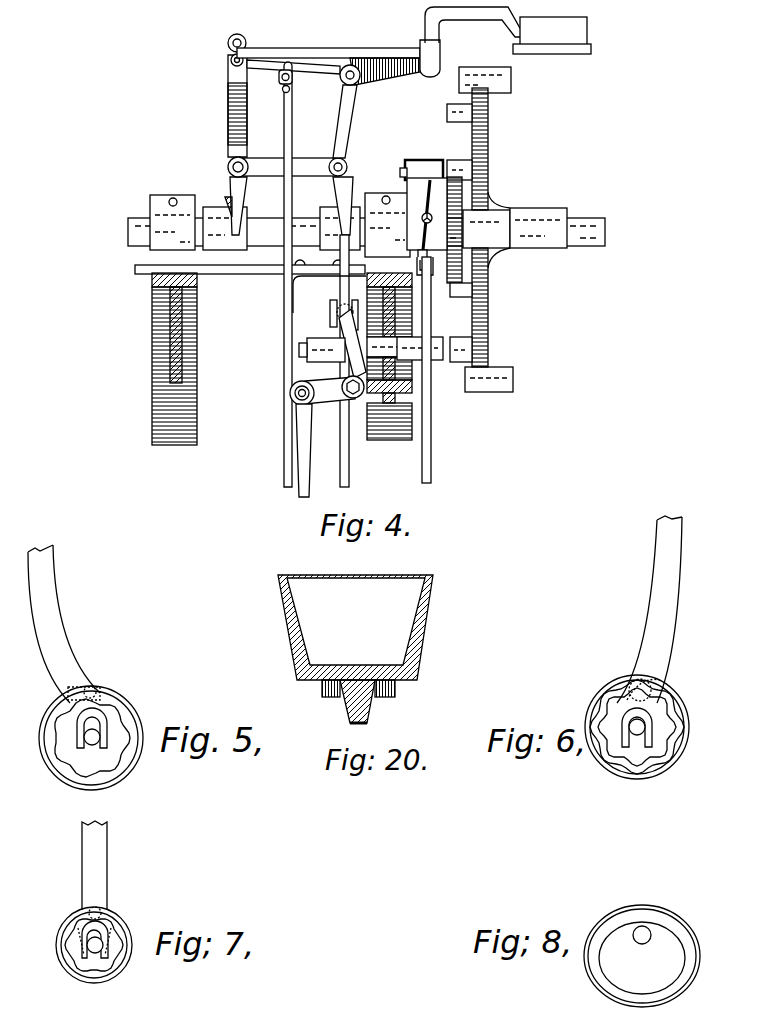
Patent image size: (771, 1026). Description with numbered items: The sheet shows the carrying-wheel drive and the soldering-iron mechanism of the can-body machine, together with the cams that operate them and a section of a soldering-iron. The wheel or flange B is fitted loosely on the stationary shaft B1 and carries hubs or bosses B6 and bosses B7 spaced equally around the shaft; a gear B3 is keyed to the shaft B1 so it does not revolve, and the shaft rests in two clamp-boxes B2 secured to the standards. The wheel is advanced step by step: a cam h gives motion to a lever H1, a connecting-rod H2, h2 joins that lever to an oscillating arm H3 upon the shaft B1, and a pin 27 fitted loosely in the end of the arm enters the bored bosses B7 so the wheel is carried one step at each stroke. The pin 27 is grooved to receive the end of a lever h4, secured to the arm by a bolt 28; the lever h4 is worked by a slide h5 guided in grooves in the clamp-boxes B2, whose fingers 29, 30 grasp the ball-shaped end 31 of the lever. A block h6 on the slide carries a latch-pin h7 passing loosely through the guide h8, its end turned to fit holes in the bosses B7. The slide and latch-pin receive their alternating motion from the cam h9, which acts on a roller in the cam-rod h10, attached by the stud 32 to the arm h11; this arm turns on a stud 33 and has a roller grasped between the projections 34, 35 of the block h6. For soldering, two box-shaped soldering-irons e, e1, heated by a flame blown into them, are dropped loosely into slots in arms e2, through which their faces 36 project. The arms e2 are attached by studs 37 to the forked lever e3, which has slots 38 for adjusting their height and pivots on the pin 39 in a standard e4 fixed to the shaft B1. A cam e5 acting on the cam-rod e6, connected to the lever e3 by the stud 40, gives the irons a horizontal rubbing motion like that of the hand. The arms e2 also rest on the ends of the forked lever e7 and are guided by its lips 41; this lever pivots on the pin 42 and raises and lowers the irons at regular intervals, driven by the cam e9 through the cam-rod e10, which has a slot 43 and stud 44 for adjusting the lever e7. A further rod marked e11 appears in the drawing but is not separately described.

In FIG. 4, the wheel or flange B is at (605, 230).
In FIG. 4, the stationary shaft B1 is at (128, 233).
In FIG. 4, the clamp-boxes B2 is at (150, 208).
In FIG. 4, the gear B3 is at (488, 194).
In FIG. 4, the hubs or bosses B6 is at (511, 90).
In FIG. 4, the bosses B7 is at (455, 160).
In FIG. 4, the lever H1 is at (166, 359).
In FIG. 4, the connecting-rod H2 is at (393, 440).
In FIG. 4, the oscillating arm H3 is at (412, 385).
In FIG. 8, the cam h is at (642, 956).
In FIG. 4, the connecting-rod h2 is at (432, 440).
In FIG. 4, the lever h4 is at (414, 208).
In FIG. 4, the slide h5 is at (432, 158).
In FIG. 4, the block h6 is at (329, 327).
In FIG. 4, the latch-pin h7 is at (299, 354).
In FIG. 4, the guide h8 is at (438, 337).
In FIG. 7, the cam h9 is at (56, 946).
In FIG. 4, the cam-rod h10 is at (314, 450).
In FIG. 7, the cam-rod h10 is at (94, 888).
In FIG. 4, the arm h11 is at (315, 396).
In FIG. 4, the soldering-iron e is at (552, 35).
In FIG. 20, the soldering-iron e is at (355, 627).
In FIG. 4, the soldering-iron e1 is at (353, 150).
In FIG. 4, the arms e2 is at (473, 25).
In FIG. 20, the arms e2 is at (357, 699).
In FIG. 4, the forked lever e3 is at (222, 134).
In FIG. 4, the standard e4 is at (221, 200).
In FIG. 4, the cam e5 is at (272, 167).
In FIG. 6, the cam e5 is at (637, 738).
In FIG. 4, the cam-rod e6 is at (350, 476).
In FIG. 6, the cam-rod e6 is at (649, 609).
In FIG. 4, the forked lever e7 is at (328, 66).
In FIG. 5, the cam e9 is at (92, 738).
In FIG. 5, the cam-rod e10 is at (64, 624).
In FIG. 4, the vertical rod e11 is at (274, 274).
In FIG. 4, the pin 27 is at (400, 172).
In FIG. 4, the bolt 28 is at (420, 222).
In FIG. 4, the finger 29 is at (432, 274).
In FIG. 4, the finger 30 is at (432, 267).
In FIG. 4, the ball-shaped end 31 is at (429, 251).
In FIG. 4, the stud 32 is at (290, 394).
In FIG. 4, the stud 33 is at (353, 396).
In FIG. 4, the projection 34 is at (328, 308).
In FIG. 4, the projection 35 is at (351, 309).
In FIG. 20, the faces 36 is at (368, 725).
In FIG. 4, the studs 37 is at (231, 61).
In FIG. 4, the slots 38 is at (228, 44).
In FIG. 4, the pin 39 is at (228, 167).
In FIG. 4, the stud 40 is at (330, 167).
In FIG. 4, the lips 41 is at (430, 58).
In FIG. 4, the pin 42 is at (367, 134).
In FIG. 4, the slot 43 is at (282, 90).
In FIG. 4, the stud 44 is at (279, 76).